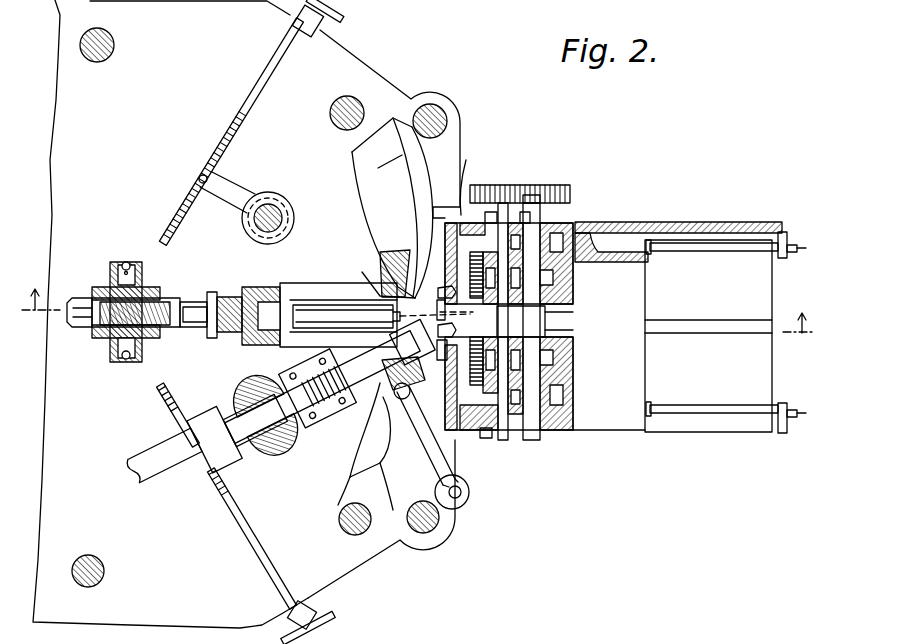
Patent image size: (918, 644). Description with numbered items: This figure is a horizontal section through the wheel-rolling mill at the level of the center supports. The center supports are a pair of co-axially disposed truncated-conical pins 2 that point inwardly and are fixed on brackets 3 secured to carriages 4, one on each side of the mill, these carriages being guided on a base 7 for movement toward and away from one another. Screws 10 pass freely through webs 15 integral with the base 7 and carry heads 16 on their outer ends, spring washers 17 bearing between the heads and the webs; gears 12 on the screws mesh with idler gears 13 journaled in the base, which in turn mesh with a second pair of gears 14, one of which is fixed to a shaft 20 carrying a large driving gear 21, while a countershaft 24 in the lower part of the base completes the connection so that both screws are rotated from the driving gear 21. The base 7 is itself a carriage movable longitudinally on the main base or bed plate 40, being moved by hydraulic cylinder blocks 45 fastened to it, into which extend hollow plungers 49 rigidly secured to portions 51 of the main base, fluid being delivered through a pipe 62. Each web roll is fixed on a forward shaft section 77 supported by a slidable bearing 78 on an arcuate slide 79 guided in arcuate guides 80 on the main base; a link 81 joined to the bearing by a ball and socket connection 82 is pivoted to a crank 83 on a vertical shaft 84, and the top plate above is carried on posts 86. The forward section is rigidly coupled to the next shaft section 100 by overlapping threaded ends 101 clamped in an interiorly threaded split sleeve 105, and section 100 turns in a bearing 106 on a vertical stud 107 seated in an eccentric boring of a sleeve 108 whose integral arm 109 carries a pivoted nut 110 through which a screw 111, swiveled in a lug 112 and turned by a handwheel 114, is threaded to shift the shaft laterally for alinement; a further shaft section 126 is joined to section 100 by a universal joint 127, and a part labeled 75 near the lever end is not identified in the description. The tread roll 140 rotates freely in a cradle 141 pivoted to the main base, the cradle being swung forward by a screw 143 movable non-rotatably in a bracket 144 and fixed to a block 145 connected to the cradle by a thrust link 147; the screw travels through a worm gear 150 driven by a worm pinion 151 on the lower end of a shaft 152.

The pins 2 is at (455, 330).
The brackets 3 is at (437, 303).
The carriages 4 is at (449, 375).
The base 7 is at (632, 303).
The screws 10 is at (480, 338).
The gears 12 is at (450, 214).
The idler gears 13 is at (568, 262).
The gear 14 is at (568, 300).
The webs 15 is at (511, 211).
The heads 16 is at (468, 422).
The spring washers 17 is at (464, 180).
The shaft 20 is at (575, 216).
The driving gear 21 is at (565, 183).
The countershaft 24 is at (545, 325).
The main base 40 is at (385, 86).
The cylinder blocks 45 is at (630, 243).
The hollow plunger 49 is at (714, 250).
The portions of the main base 51 is at (783, 231).
The pipe 62 is at (798, 250).
The clamp head 75 is at (414, 341).
The forward shaft section 77 is at (322, 387).
The slidable bearing 78 is at (390, 253).
The arcuate slide 79 is at (400, 176).
The arcuate guides 80 is at (356, 152).
The link 81 is at (452, 470).
The ball and socket connection 82 is at (401, 400).
The crank 83 is at (468, 505).
The vertical shaft 84 is at (440, 117).
The posts 86 is at (116, 45).
The shaft section 100 is at (255, 428).
The overlapping threaded ends 101 is at (325, 405).
The split sleeve 105 is at (284, 373).
The bearing 106 is at (276, 440).
The vertical stud 107 is at (287, 204).
The sleeve 108 is at (280, 245).
The arm 109 is at (222, 200).
The nut 110 is at (198, 179).
The screw 111 is at (233, 152).
The lug 112 is at (327, 28).
The handwheel 114 is at (347, 14).
The fourth shaft section 126 is at (158, 476).
The universal joint 127 is at (232, 462).
The tread roll 140 is at (328, 313).
The cradle 141 is at (305, 292).
The screw 143 is at (108, 338).
The bracket 144 is at (76, 298).
The block 145 is at (192, 307).
The thrust link 147 is at (229, 297).
The worm gear 150 is at (125, 359).
The worm pinion 151 is at (126, 262).
The shaft 152 is at (131, 265).